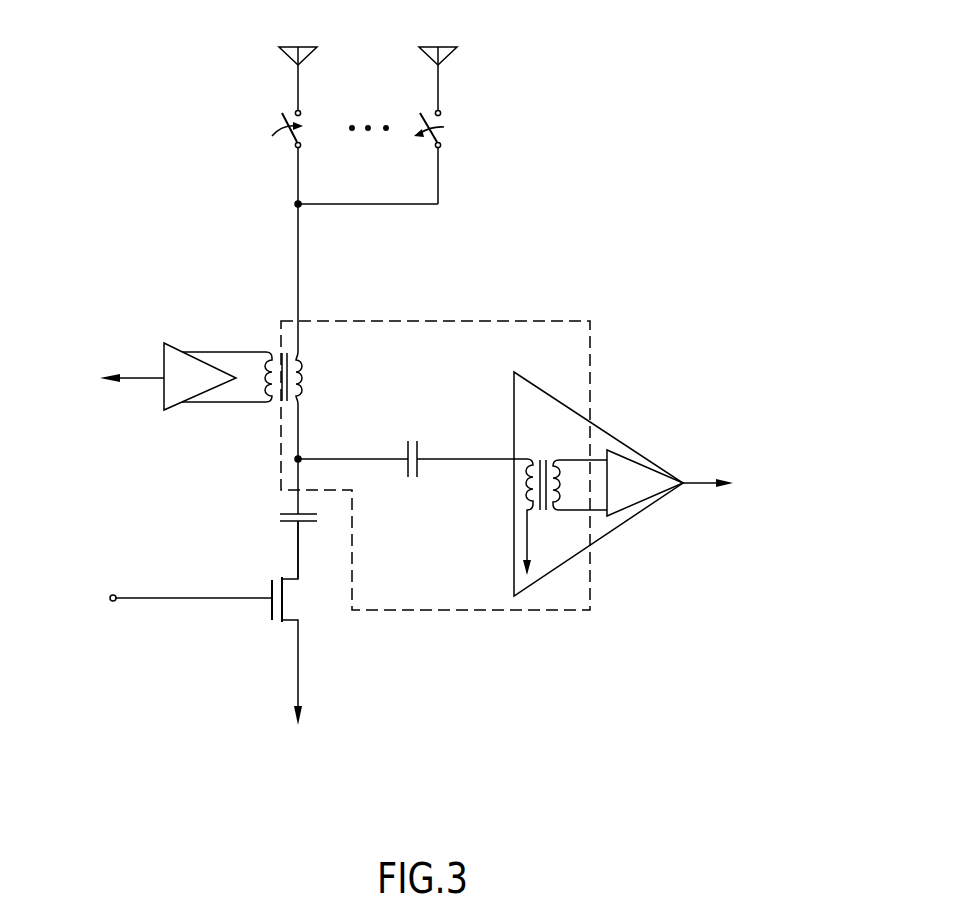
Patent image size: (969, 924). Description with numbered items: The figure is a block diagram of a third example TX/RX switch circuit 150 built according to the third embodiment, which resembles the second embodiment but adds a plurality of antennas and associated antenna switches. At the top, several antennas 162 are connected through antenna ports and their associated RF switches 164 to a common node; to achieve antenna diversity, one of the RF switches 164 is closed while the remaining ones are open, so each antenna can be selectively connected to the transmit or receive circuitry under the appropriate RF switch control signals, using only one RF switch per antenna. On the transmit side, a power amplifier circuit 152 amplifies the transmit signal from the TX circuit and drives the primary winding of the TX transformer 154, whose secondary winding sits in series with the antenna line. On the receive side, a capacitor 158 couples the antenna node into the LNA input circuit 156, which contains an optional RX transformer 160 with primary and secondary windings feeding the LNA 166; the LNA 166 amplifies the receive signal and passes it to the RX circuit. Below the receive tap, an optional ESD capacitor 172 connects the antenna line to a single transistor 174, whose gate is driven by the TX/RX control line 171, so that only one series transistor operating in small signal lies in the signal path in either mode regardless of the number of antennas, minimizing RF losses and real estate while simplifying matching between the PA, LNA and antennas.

The TX/RX switch circuit 150 is at (653, 103).
The power amplifier circuit 152 is at (190, 402).
The TX transformer 154 is at (280, 403).
The LNA input circuit 156 is at (450, 612).
The capacitor 158 is at (418, 447).
The RX transformer 160 is at (545, 512).
The antennas 162 is at (288, 46).
The RF switches 164 is at (303, 133).
The LNA 166 is at (633, 462).
The TX/RX control line 171 is at (237, 596).
The ESD capacitor 172 is at (293, 510).
The transistor switch 174 is at (270, 612).